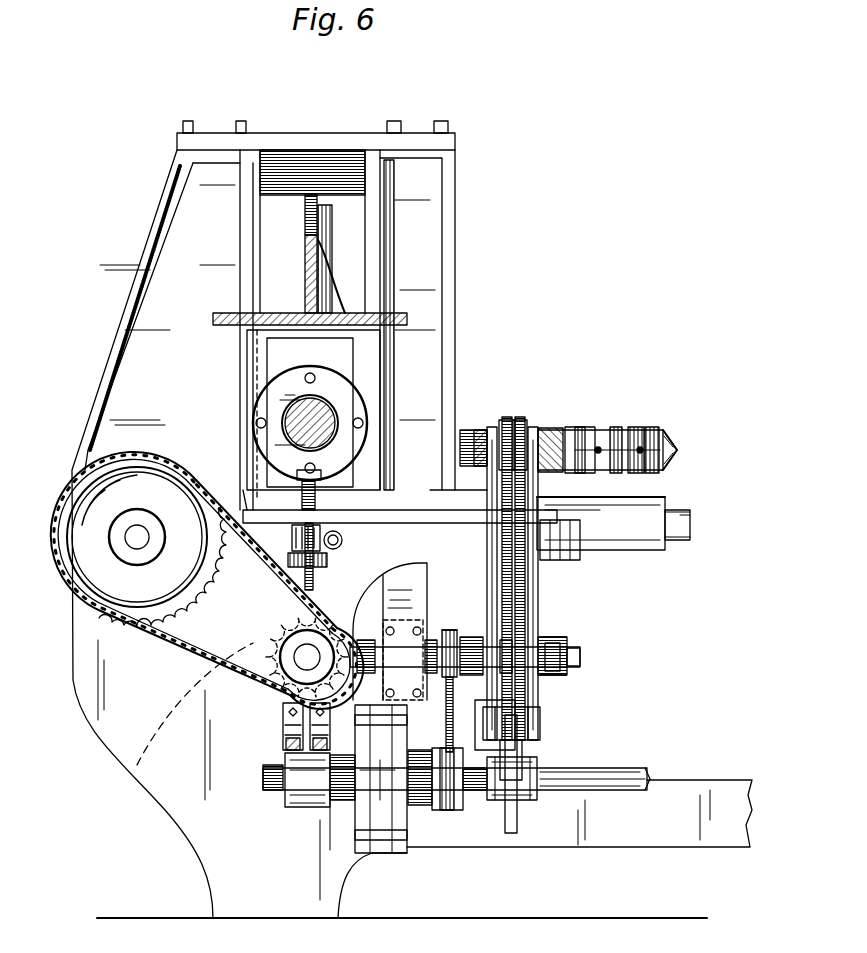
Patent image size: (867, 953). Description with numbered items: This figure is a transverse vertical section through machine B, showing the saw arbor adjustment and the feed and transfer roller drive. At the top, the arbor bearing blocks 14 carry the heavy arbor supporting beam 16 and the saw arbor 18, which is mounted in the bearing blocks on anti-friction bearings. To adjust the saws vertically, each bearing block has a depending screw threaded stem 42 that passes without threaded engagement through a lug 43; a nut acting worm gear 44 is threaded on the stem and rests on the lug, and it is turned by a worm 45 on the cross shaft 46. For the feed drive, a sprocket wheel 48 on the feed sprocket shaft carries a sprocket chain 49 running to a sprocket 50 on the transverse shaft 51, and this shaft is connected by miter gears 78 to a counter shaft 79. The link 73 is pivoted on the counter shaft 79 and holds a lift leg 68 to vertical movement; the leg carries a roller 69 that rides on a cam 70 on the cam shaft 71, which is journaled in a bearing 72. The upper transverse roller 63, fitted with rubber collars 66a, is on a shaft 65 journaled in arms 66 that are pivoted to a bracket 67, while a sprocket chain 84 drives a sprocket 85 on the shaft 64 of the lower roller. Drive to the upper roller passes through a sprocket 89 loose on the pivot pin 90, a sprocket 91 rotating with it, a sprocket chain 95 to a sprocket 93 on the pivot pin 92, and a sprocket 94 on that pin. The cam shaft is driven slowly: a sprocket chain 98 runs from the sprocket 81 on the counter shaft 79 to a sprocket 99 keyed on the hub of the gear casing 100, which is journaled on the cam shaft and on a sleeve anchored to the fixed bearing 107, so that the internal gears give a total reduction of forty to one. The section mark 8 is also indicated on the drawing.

The machine B is at (458, 234).
The arbor supporting beam 16 is at (318, 256).
The arbor bearing blocks 14 is at (367, 468).
The saw arbor 18 is at (340, 425).
The cross shaft 46 is at (336, 535).
The worm 45 is at (345, 540).
The lug 43 is at (330, 560).
The screw threaded stem 42 is at (310, 580).
The sprocket wheel 48 is at (137, 537).
The nut acting worm gear 44 is at (310, 560).
The sprocket chain 49 is at (168, 640).
The transverse shaft 51 is at (290, 672).
The sprocket 50 is at (245, 672).
The miter gears 78 is at (205, 700).
The fixed bearing 107 is at (295, 733).
The housing block / section line 8 is at (372, 685).
The sprocket 81 is at (449, 632).
The counter shaft 79 is at (580, 660).
The link 73 is at (560, 670).
The pivot pin 90 is at (560, 645).
The sprocket 91 is at (535, 683).
The sprocket 89 is at (520, 690).
The sprocket chain 84 is at (520, 600).
The sprocket chain 95 is at (530, 578).
The sprocket 94 is at (507, 420).
The sprocket 93 is at (520, 418).
The pivot pin 92 is at (462, 430).
The upper transverse roller 63 is at (628, 418).
The arms 66 is at (560, 428).
The rubber collars 66a is at (640, 425).
The shaft 65 is at (680, 452).
The bracket 67 is at (613, 523).
The sprocket 85 is at (560, 497).
The shaft 64 is at (672, 540).
The cam shaft 71 is at (645, 772).
The gear casing 100 is at (365, 838).
The sprocket 99 is at (457, 812).
The sprocket chain 98 is at (448, 730).
The roller 69 is at (525, 760).
The cam 70 is at (511, 833).
The lift leg 68 is at (540, 770).
The bearing 72 is at (530, 770).